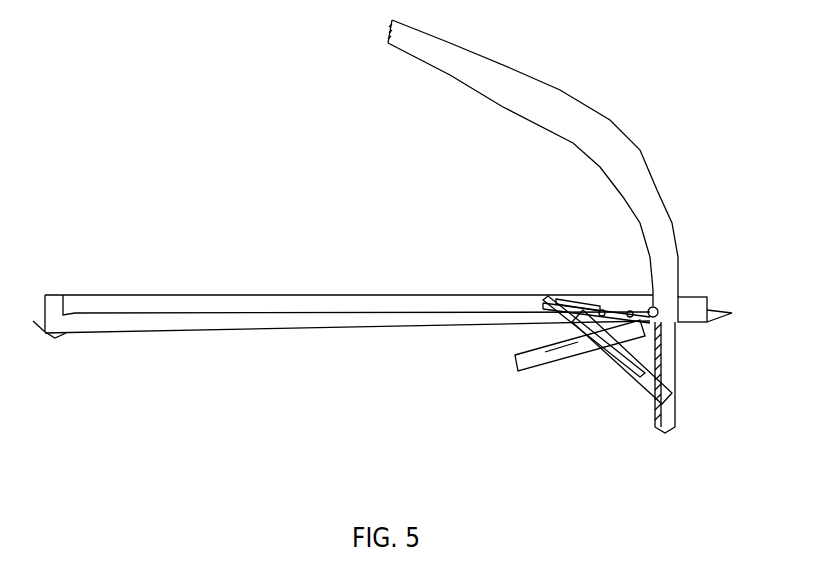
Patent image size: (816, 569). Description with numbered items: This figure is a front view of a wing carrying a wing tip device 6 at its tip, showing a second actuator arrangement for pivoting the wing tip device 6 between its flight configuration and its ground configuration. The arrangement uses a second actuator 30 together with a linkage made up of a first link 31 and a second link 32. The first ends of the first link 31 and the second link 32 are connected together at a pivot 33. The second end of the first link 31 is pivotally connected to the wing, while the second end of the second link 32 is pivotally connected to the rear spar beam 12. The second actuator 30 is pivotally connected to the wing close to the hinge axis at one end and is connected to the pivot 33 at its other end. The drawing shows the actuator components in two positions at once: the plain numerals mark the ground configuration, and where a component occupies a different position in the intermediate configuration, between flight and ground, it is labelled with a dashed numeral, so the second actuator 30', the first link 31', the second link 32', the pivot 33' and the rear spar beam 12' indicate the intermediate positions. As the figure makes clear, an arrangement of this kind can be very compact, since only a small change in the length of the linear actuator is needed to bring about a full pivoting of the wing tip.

The wing tip device 6 is at (582, 140).
The rear spar beam 12 is at (709, 377).
The rear spar beam 12' is at (525, 387).
The second actuator 30 is at (705, 330).
The second actuator 30' is at (604, 273).
The first link 31 is at (541, 352).
The first link 31' is at (497, 279).
The second link 32 is at (622, 394).
The second link 32' is at (530, 399).
The pivot 33 is at (589, 387).
The pivot 33' is at (543, 257).